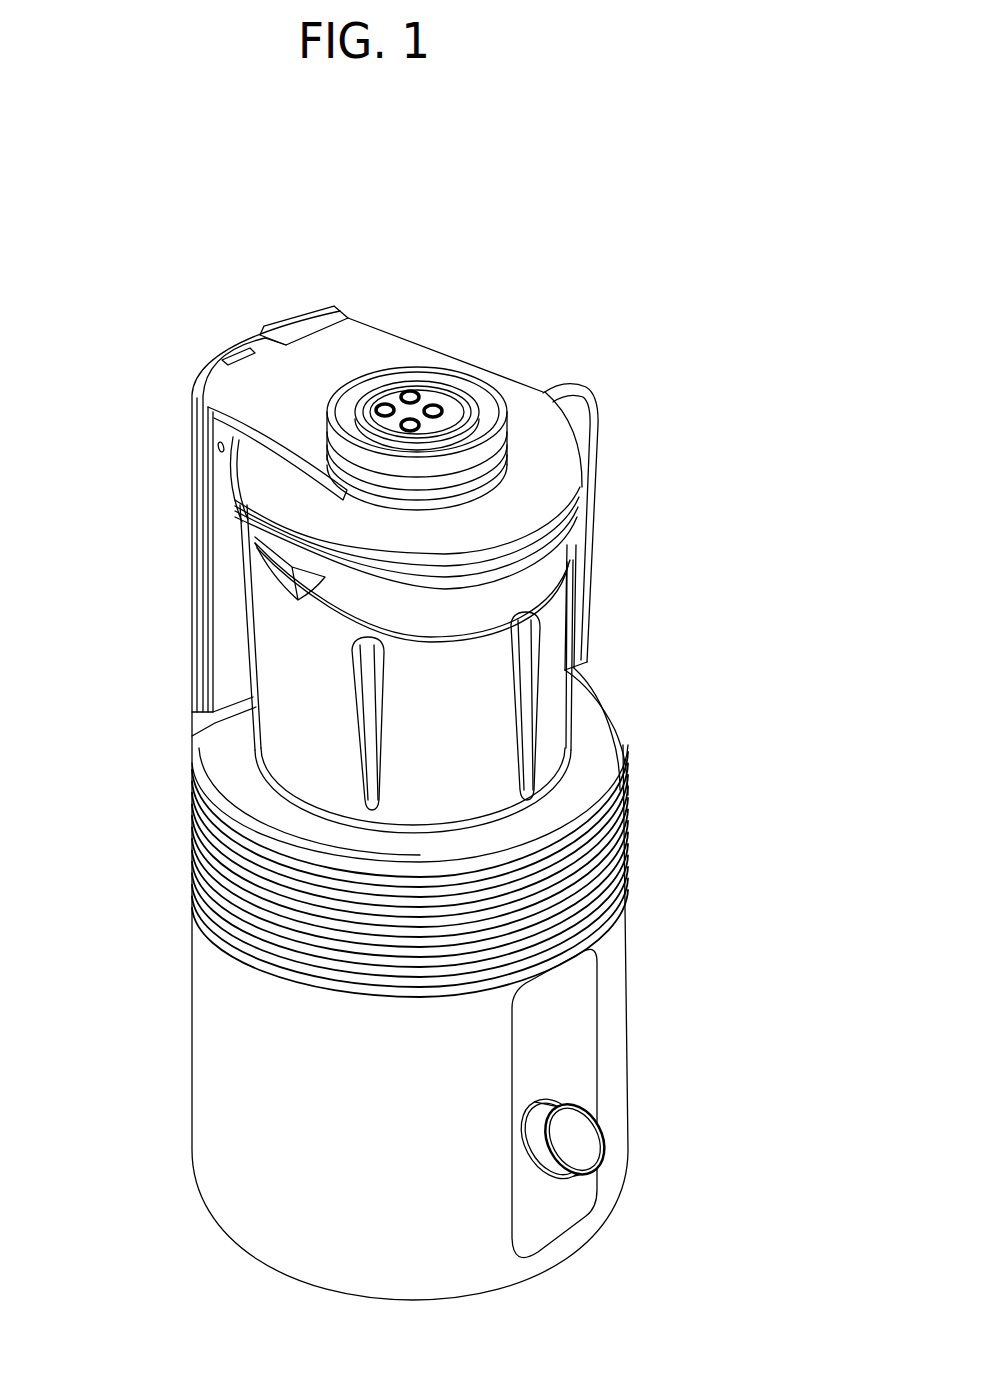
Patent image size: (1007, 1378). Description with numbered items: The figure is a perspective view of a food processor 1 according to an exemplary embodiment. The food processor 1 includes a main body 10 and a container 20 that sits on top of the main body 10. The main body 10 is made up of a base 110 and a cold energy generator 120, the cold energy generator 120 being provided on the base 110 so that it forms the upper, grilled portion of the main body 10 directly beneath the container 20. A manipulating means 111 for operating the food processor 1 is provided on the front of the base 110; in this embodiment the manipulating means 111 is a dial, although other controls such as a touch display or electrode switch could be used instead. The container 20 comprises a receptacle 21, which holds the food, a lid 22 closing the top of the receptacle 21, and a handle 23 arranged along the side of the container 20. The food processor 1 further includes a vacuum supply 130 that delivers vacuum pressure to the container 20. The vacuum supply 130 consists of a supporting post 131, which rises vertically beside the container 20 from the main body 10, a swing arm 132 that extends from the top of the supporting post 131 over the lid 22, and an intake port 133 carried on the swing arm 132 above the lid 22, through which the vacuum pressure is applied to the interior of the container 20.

The food processor 1 is at (396, 198).
The main body 10 is at (737, 837).
The container 20 is at (590, 398).
The receptacle 21 is at (545, 697).
The lid 22 is at (548, 462).
The handle 23 is at (598, 537).
The base 110 is at (610, 995).
The manipulating means 111 is at (580, 1139).
The cold energy generator 120 is at (622, 853).
The vacuum supply 130 is at (177, 337).
The supporting post 131 is at (218, 563).
The swing arm 132 is at (371, 353).
The intake port 133 is at (473, 400).